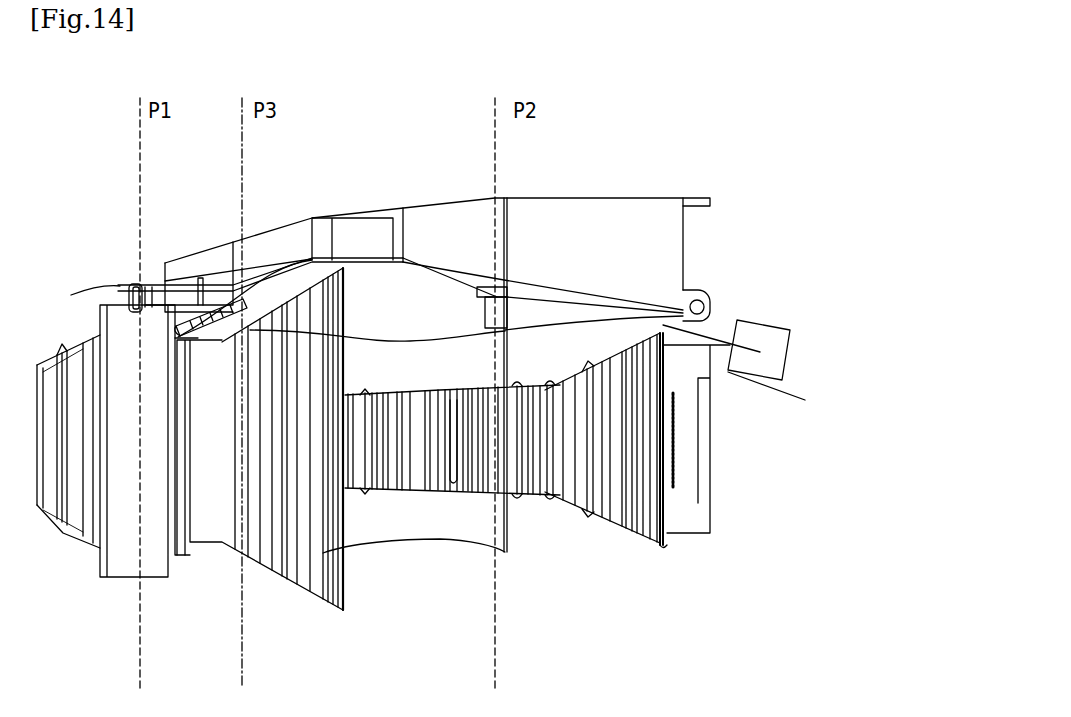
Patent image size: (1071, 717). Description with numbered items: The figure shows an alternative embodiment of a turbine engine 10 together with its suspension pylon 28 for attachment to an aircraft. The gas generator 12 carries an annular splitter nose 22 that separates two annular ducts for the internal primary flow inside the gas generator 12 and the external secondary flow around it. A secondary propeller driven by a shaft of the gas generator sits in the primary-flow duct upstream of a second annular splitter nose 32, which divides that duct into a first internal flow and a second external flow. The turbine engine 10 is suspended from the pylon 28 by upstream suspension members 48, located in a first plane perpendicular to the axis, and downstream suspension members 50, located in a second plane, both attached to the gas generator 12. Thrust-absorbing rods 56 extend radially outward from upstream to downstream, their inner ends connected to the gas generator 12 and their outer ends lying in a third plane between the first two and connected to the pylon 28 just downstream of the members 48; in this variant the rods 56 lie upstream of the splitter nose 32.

The turbine engine 10 is at (658, 170).
The gas generator 12 is at (545, 517).
The annular splitter nose 22 is at (71, 295).
The pylon 28 is at (653, 258).
The second annular splitter nose 32 is at (250, 330).
The upstream suspension members 48 is at (150, 288).
The downstream suspension members 50 is at (505, 320).
The thrust-absorbing rods 56 is at (203, 286).